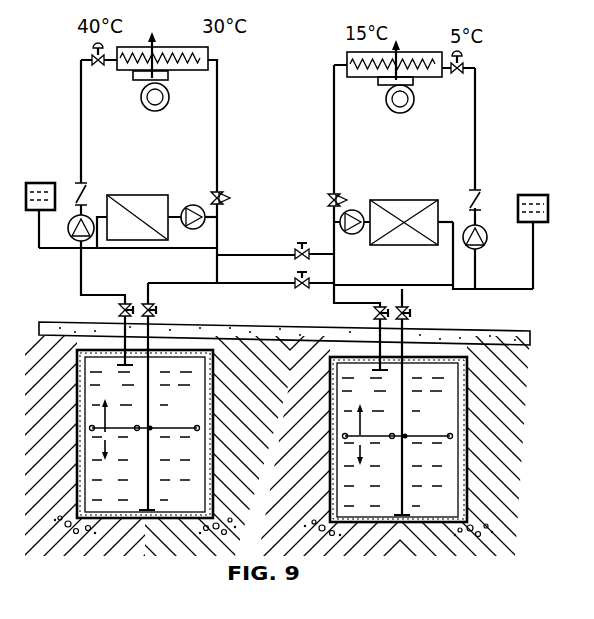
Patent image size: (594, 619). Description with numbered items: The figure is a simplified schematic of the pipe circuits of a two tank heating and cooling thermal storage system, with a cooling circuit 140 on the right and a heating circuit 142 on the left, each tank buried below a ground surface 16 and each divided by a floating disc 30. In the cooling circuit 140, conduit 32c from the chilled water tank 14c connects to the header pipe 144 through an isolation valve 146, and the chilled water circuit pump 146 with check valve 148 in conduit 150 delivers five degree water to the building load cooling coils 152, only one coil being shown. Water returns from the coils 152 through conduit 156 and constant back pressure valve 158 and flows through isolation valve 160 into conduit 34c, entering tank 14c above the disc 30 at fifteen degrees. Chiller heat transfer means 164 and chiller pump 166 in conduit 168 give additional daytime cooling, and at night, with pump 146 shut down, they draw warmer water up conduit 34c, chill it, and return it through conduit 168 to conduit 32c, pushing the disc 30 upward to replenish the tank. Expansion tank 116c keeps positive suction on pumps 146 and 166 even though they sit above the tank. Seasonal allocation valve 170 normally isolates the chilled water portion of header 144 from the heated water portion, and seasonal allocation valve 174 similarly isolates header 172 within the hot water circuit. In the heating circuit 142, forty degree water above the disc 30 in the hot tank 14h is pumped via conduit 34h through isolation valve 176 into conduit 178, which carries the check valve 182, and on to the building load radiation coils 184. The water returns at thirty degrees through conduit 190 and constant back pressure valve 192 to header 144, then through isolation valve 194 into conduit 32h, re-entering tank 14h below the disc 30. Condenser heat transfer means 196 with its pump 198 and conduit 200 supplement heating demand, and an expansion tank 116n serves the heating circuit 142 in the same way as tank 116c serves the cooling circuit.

The heating circuit 142 is at (70, 64).
The cooling circuit 140 is at (500, 78).
The building load radiation coils 184 is at (150, 45).
The building load cooling coils 152 is at (408, 50).
The conduit 178 is at (81, 105).
The conduit 190 is at (217, 135).
The constant back pressure valve 192 is at (222, 192).
The expansion tank 116n is at (50, 183).
The check valve 182 is at (84, 200).
The condenser heat transfer means 196 is at (143, 195).
The pump 198 is at (193, 205).
The conduit 200 is at (100, 257).
The isolation valve 176 is at (119, 310).
The isolation valve 194 is at (158, 310).
The header 172 is at (266, 252).
The header pipe 144 is at (275, 282).
The seasonal allocation valve 174 is at (302, 247).
The seasonal allocation valve 170 is at (292, 288).
The conduit 156 is at (334, 110).
The conduit 150 is at (478, 120).
The constant back pressure valve 158 is at (330, 194).
The chiller pump 166 is at (352, 208).
The chiller heat transfer means 164 is at (430, 199).
The check valve 148 is at (477, 194).
The expansion tank 116c is at (545, 196).
The chilled water circuit pump 146 is at (480, 250).
The conduit 168 is at (447, 270).
The isolation valve 160 is at (375, 313).
The ground surface slab 16 is at (470, 337).
The hot water tank 14h is at (214, 427).
The chilled water tank 14c is at (467, 400).
The conduit 34h is at (75, 348).
The conduit 34c is at (333, 362).
The conduit 32h is at (150, 383).
The conduit 32c is at (404, 395).
The disc 30 is at (187, 430).